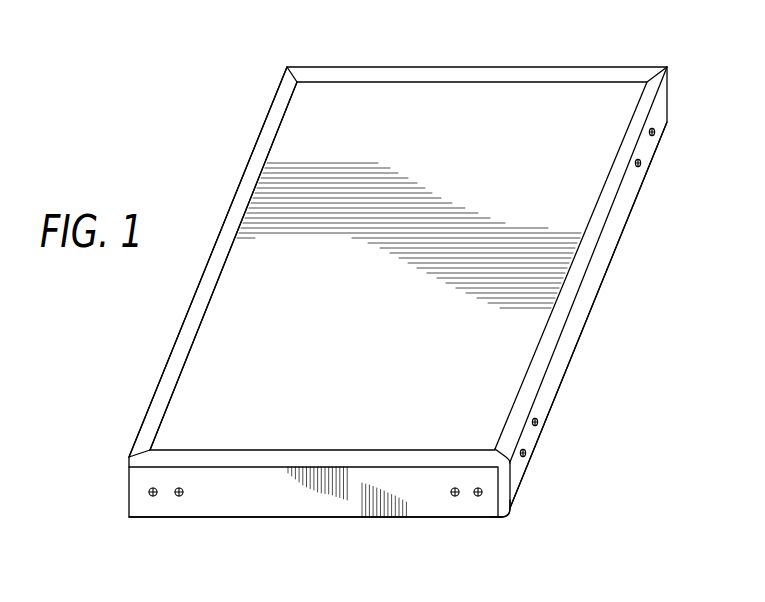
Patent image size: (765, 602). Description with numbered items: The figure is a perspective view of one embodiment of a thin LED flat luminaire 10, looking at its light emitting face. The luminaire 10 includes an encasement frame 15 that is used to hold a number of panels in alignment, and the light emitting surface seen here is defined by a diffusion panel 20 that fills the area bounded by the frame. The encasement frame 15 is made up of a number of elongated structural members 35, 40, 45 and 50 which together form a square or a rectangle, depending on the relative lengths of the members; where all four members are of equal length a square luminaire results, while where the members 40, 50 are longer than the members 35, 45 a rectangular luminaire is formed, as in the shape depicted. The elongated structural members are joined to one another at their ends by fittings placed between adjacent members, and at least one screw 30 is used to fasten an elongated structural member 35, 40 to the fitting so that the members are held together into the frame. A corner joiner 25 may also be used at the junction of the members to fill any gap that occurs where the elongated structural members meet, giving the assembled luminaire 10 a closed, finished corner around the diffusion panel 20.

The luminaire 10 is at (196, 160).
The encasement frame 15 is at (330, 507).
The diffusion panel 20 is at (528, 93).
The corner joiner 25 is at (505, 488).
The screw 30 is at (453, 492).
The elongated structural member 35 is at (225, 493).
The elongated structural member 40 is at (575, 320).
The elongated structural member 45 is at (323, 67).
The elongated structural member 50 is at (162, 373).